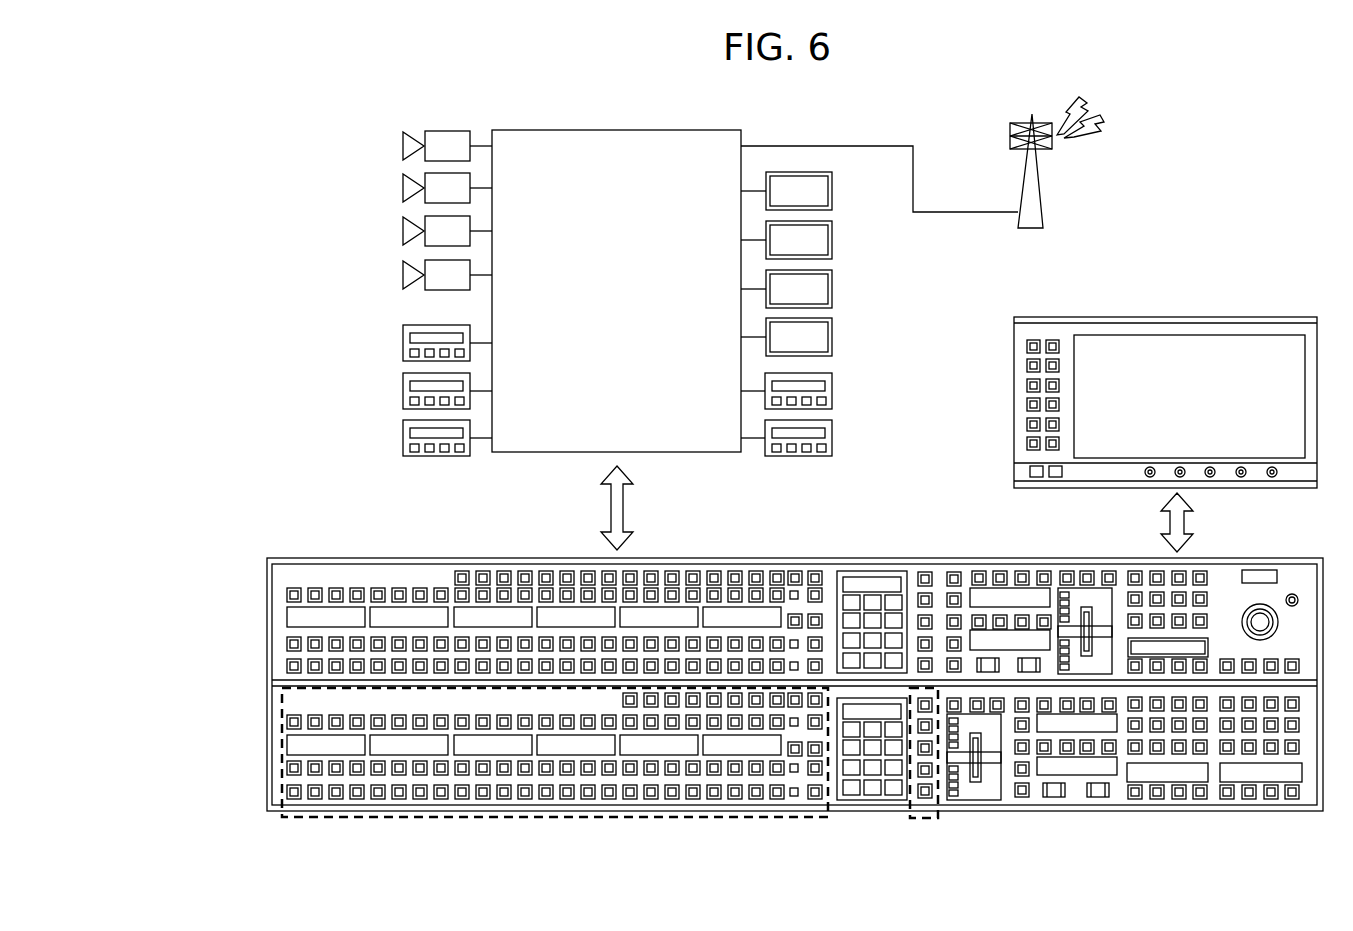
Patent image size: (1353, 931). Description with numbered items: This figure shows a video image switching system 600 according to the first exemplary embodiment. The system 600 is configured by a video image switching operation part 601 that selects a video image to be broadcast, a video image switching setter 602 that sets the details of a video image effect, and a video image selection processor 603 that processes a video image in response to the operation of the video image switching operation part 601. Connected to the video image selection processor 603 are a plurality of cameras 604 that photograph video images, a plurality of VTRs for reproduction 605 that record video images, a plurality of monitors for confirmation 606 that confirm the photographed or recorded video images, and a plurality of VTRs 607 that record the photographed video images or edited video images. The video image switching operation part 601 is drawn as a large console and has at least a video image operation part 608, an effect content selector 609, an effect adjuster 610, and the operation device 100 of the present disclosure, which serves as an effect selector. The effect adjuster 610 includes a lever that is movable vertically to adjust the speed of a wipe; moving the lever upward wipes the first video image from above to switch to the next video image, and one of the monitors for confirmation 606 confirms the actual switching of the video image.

The video image switching system 600 is at (888, 90).
The video image switching operation part 601 is at (1328, 548).
The video image switching setter 602 is at (1220, 327).
The video image selection processor 603 is at (685, 140).
The cameras 604 is at (385, 125).
The VTRs for reproduction 605 is at (385, 320).
The monitors for confirmation 606 is at (850, 165).
The VTRs 607 is at (850, 370).
The video image operation part 608 is at (297, 707).
The effect content selector 609 is at (925, 808).
The effect adjuster 610 is at (988, 788).
The operation device 100 is at (867, 785).